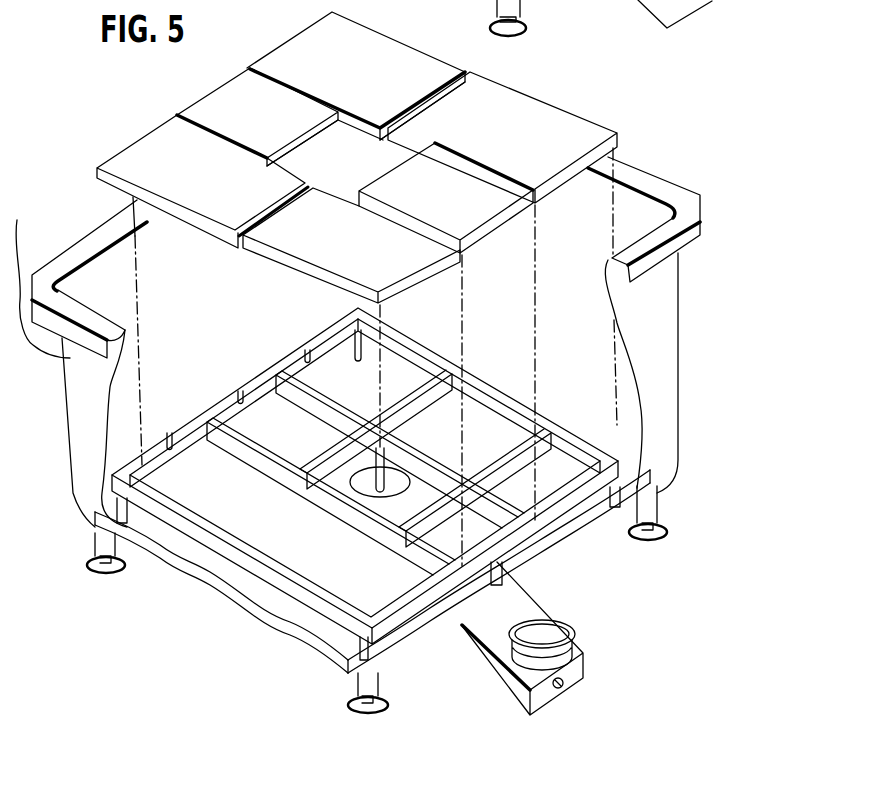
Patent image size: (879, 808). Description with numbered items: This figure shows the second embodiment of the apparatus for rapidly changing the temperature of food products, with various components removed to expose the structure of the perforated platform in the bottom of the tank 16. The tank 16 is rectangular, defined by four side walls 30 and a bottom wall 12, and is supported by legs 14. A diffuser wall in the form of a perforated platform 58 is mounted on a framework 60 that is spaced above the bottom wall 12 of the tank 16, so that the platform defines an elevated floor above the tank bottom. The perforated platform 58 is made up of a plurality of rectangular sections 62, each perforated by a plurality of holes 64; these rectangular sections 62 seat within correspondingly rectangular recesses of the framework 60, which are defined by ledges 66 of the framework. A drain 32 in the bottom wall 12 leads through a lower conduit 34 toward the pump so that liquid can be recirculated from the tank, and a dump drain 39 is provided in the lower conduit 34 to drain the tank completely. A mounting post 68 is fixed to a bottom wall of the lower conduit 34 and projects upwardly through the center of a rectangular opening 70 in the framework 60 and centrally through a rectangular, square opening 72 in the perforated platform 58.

The bottom wall 12 is at (165, 545).
The legs 14 is at (523, 9).
The tank 16 is at (680, 321).
The side walls 30 is at (90, 283).
The drain 32 is at (310, 493).
The lower conduit 34 is at (522, 614).
The dump drain 39 is at (700, 3).
The perforated platform 58 is at (153, 118).
The framework 60 is at (290, 592).
The rectangular sections 62 is at (137, 152).
The holes 64 is at (315, 52).
The ledges 66 is at (240, 401).
The mounting post 68 is at (310, 500).
The rectangular opening 70 is at (397, 477).
The rectangular opening 72 is at (360, 192).